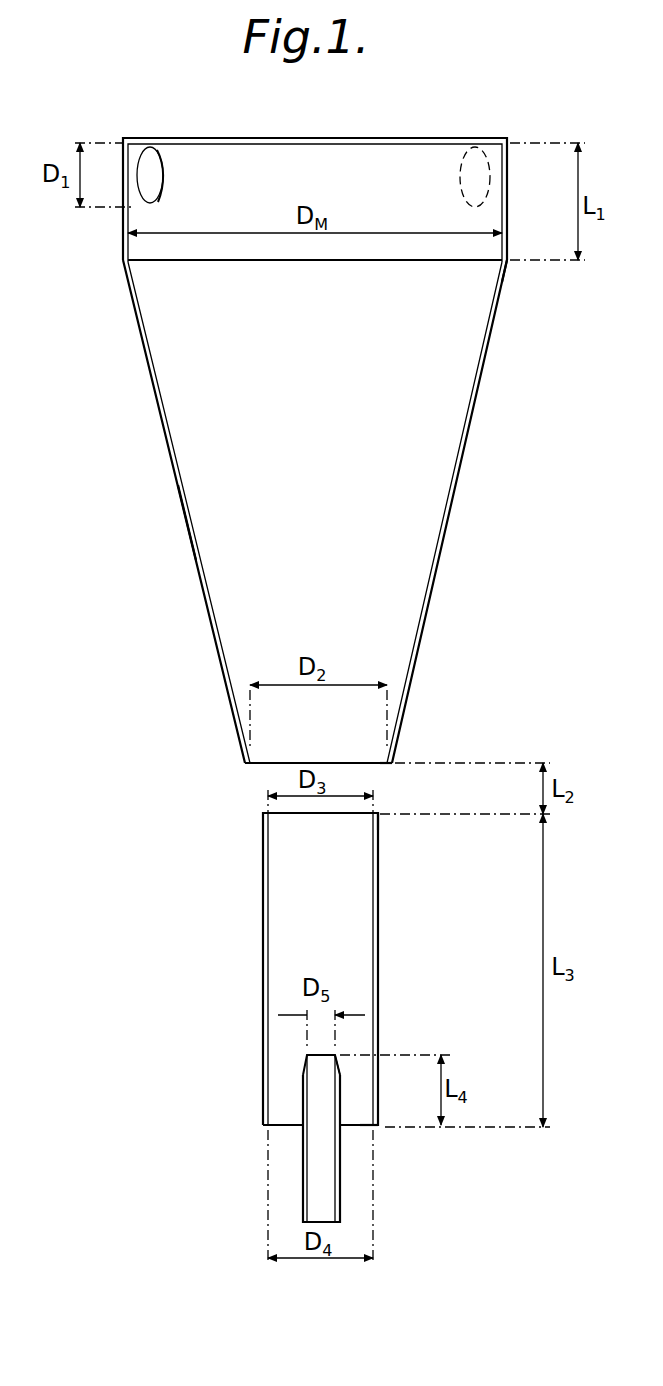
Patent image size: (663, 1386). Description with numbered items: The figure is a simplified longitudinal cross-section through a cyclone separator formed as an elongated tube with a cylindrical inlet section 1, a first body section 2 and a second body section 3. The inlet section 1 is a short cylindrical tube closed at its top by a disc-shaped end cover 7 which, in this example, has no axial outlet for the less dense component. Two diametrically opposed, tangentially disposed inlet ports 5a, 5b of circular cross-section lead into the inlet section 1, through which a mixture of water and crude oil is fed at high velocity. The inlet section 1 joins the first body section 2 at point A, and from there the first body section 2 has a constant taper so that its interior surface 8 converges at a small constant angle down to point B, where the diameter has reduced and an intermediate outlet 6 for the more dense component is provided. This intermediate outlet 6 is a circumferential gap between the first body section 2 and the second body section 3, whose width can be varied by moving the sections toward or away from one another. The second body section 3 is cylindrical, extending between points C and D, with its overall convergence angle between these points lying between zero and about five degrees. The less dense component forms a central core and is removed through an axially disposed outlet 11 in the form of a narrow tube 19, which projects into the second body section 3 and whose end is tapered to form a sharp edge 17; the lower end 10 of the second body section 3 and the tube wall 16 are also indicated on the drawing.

The cylindrical inlet section 1 is at (122, 222).
The first body section 2 is at (171, 460).
The second body section 3 is at (262, 922).
The inlet port 5a is at (163, 170).
The inlet port 5b is at (462, 146).
The intermediate outlet 6 is at (258, 783).
The disc-shaped end cover 7 is at (383, 138).
The interior surface 8 is at (203, 549).
The bottom end of tubular portion 10 is at (290, 1140).
The axially disposed outlet 11 is at (320, 1058).
The outer wall of inner tube 16 is at (337, 1075).
The sharp edge 17 is at (333, 1052).
The narrow tube 19 is at (340, 1175).
The point A is at (489, 264).
The point B is at (392, 765).
The point C is at (372, 822).
The point D is at (365, 1135).